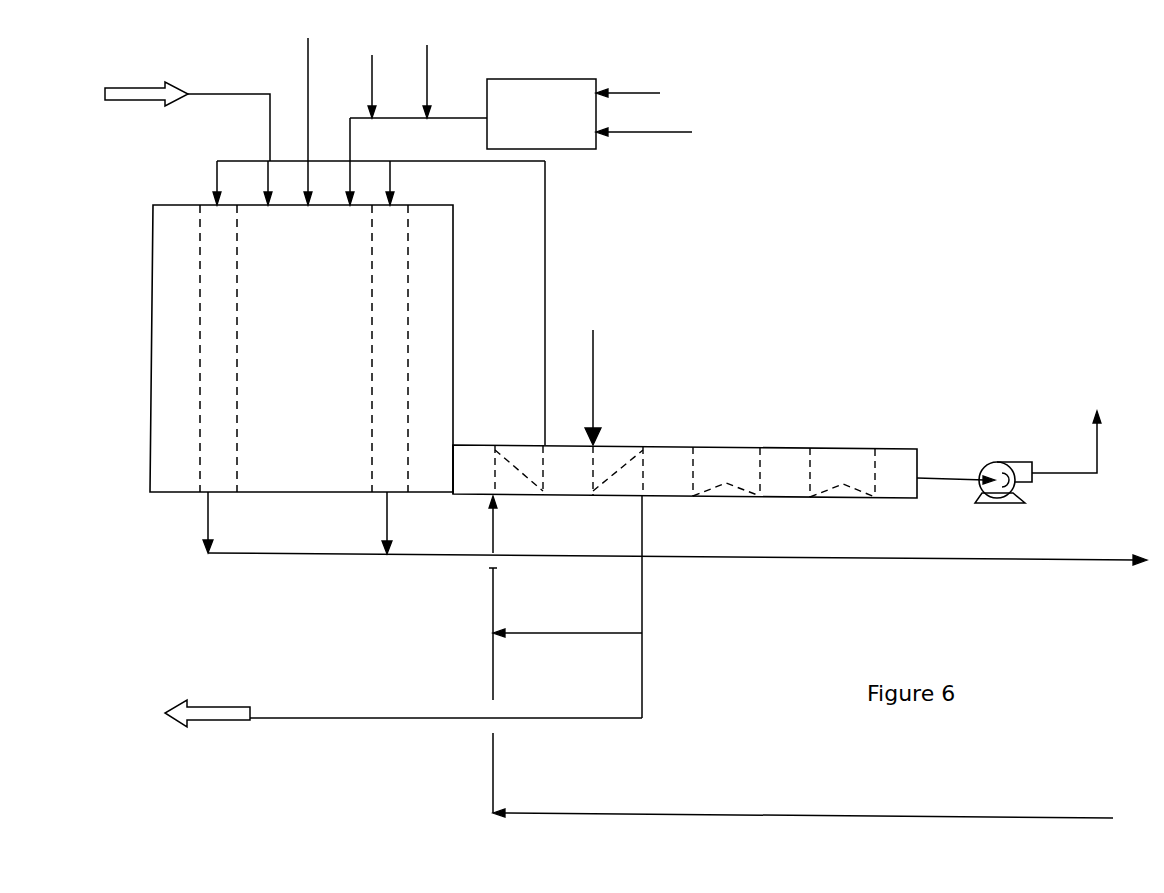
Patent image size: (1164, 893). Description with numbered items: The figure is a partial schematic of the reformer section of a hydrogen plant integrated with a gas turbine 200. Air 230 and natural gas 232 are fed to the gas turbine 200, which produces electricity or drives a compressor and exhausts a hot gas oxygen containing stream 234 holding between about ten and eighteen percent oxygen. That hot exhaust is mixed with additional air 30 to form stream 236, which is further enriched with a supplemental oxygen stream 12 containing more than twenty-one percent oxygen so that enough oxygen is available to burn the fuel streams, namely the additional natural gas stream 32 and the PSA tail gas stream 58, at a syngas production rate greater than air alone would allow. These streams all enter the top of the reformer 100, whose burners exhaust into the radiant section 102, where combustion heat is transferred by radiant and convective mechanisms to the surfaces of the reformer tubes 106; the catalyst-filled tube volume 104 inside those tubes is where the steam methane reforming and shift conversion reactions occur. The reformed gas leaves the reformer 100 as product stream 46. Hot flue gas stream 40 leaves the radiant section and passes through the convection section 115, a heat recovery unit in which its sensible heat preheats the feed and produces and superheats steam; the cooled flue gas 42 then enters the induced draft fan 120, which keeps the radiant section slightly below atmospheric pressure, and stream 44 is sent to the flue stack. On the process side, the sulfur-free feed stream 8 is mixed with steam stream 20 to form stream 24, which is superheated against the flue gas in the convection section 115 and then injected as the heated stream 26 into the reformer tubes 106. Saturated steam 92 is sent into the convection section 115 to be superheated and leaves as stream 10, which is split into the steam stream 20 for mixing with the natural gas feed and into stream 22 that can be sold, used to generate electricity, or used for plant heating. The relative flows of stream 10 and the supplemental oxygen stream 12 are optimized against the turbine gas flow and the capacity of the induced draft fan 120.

The sulfur-free feed stream 8 is at (953, 820).
The superheated steam stream 10 is at (643, 616).
The supplemental oxygen stream 12 is at (374, 76).
The steam stream 20 is at (535, 638).
The export steam stream 22 is at (643, 693).
The natural gas-steam mixture stream 24 is at (493, 568).
The heated feed stream 26 is at (545, 322).
The air stream 30 is at (429, 76).
The additional natural gas stream 32 is at (226, 95).
The flue gas stream 40 is at (453, 472).
The convection section flue gas 42 is at (937, 479).
The flue stack stream 44 is at (1095, 437).
The product stream 46 is at (903, 566).
The PSA tail gas stream 58 is at (308, 77).
The saturated steam stream 92 is at (598, 388).
The reformer 100 is at (331, 496).
The radiant section 102 is at (286, 283).
The tube volume 104 is at (230, 394).
The reformer tubes 106 is at (360, 466).
The convection section 115 is at (812, 499).
The induced draft fan 120 is at (988, 508).
The gas turbine 200 is at (561, 125).
The air stream to gas turbine 230 is at (658, 100).
The natural gas stream to gas turbine 232 is at (668, 130).
The hot gas oxygen containing stream 234 is at (444, 106).
The mixed hot gas stream 236 is at (381, 127).